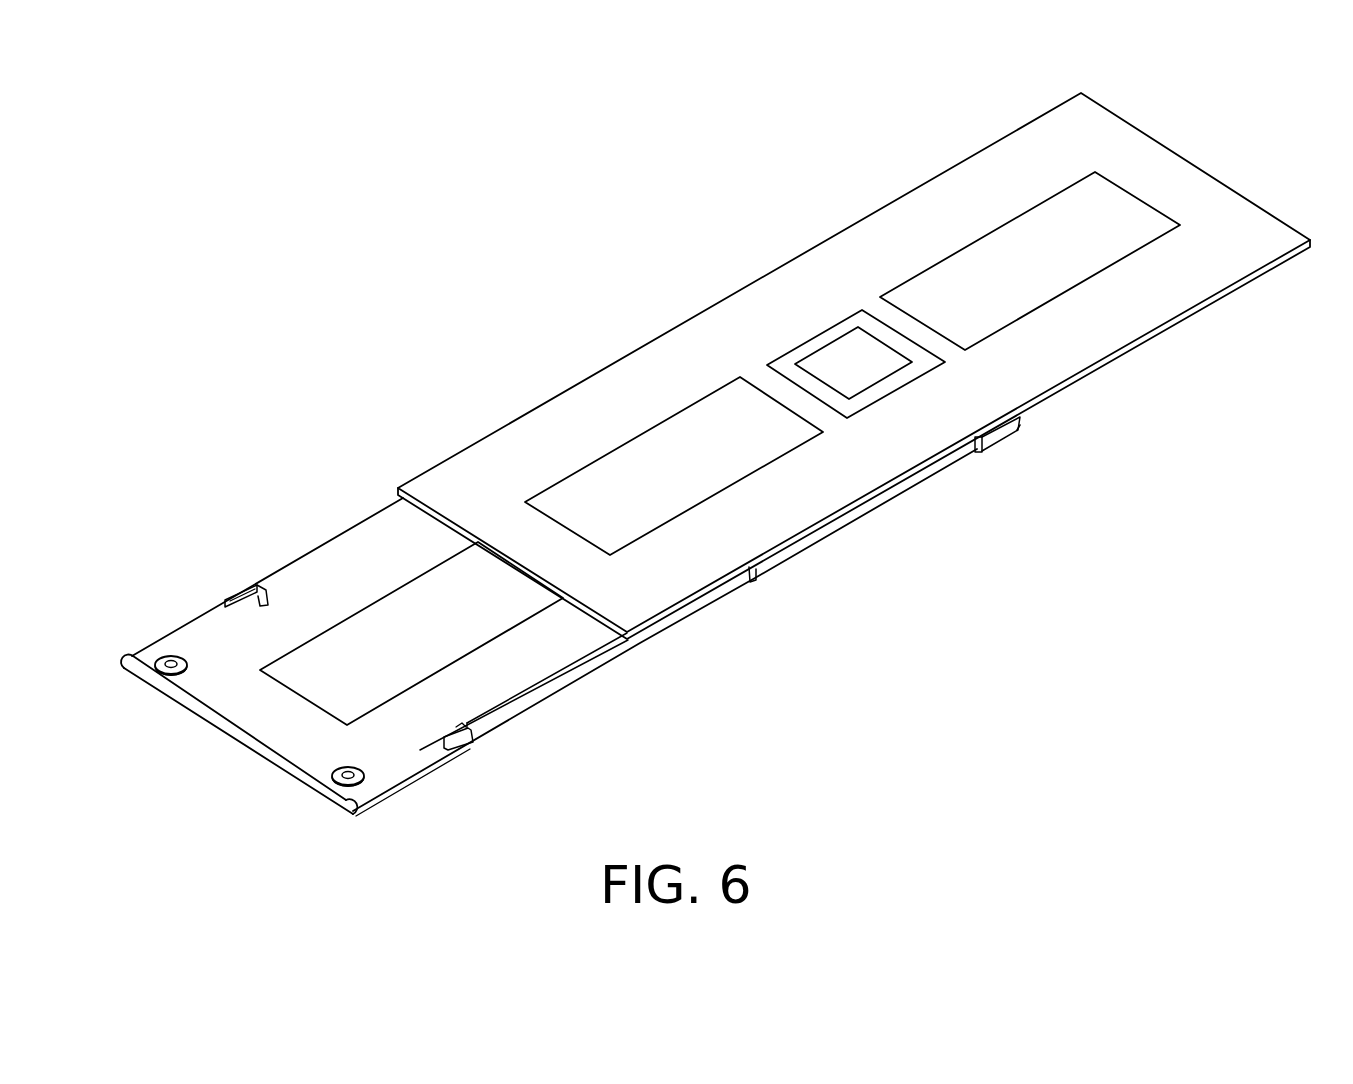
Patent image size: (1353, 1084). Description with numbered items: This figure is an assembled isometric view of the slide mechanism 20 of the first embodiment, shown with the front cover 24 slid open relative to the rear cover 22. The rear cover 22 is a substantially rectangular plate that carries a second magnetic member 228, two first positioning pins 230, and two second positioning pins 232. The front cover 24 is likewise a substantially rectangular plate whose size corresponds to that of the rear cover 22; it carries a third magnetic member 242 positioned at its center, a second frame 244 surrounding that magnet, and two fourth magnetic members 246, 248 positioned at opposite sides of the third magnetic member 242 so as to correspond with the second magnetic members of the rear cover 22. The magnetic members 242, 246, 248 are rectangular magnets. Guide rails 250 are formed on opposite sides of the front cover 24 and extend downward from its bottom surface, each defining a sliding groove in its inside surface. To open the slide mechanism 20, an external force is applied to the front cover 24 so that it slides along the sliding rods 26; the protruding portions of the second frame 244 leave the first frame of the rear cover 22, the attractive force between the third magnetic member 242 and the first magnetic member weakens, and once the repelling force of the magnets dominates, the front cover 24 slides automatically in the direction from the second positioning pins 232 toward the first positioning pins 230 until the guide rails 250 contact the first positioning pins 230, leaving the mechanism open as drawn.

The slide mechanism 20 is at (398, 358).
The rear cover 22 is at (207, 655).
The front cover 24 is at (1118, 150).
The sliding rods 26 is at (575, 670).
The second magnetic member 228 is at (355, 633).
The first positioning pins 230 is at (1005, 425).
The second positioning pins 232 is at (397, 777).
The third magnetic member 242 is at (823, 365).
The second frame 244 is at (850, 325).
The fourth magnetic member 246 is at (1027, 232).
The fourth magnetic member 248 is at (633, 477).
The guide rails 250 is at (838, 523).